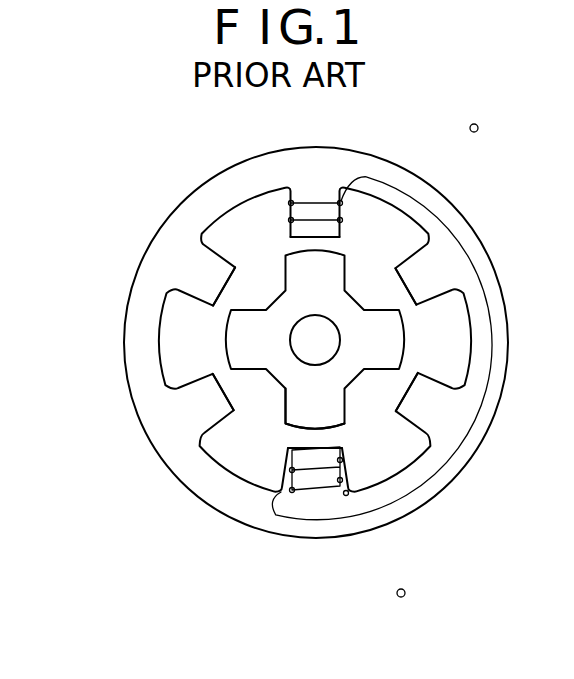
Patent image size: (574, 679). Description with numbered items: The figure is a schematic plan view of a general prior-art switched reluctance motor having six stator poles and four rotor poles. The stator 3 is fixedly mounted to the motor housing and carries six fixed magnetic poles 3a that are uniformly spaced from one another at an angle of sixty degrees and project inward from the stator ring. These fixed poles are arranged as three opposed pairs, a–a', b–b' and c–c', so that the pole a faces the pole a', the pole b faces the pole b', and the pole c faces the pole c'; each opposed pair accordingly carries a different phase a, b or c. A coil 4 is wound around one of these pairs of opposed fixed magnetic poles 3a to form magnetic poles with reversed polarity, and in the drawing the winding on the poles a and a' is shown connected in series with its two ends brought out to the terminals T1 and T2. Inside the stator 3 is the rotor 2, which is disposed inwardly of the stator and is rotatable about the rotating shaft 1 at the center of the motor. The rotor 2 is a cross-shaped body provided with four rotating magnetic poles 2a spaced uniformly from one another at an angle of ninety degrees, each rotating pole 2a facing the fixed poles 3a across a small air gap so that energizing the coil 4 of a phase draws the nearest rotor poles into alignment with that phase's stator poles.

The rotating shaft 1 is at (290, 422).
The rotor 2 is at (265, 422).
The rotating magnetic pole 2a is at (300, 427).
The stator 3 is at (153, 452).
The fixed magnetic pole 3a is at (168, 381).
The coil 4 is at (378, 560).
The terminal T1 is at (296, 193).
The terminal T2 is at (346, 495).
The fixed magnetic pole of phase a is at (315, 220).
The fixed magnetic pole of phase b is at (410, 285).
The fixed magnetic pole of phase c is at (412, 398).
The fixed magnetic pole opposed to pole a a' is at (315, 467).
The fixed magnetic pole opposed to pole b b' is at (211, 398).
The fixed magnetic pole opposed to pole c c' is at (210, 285).